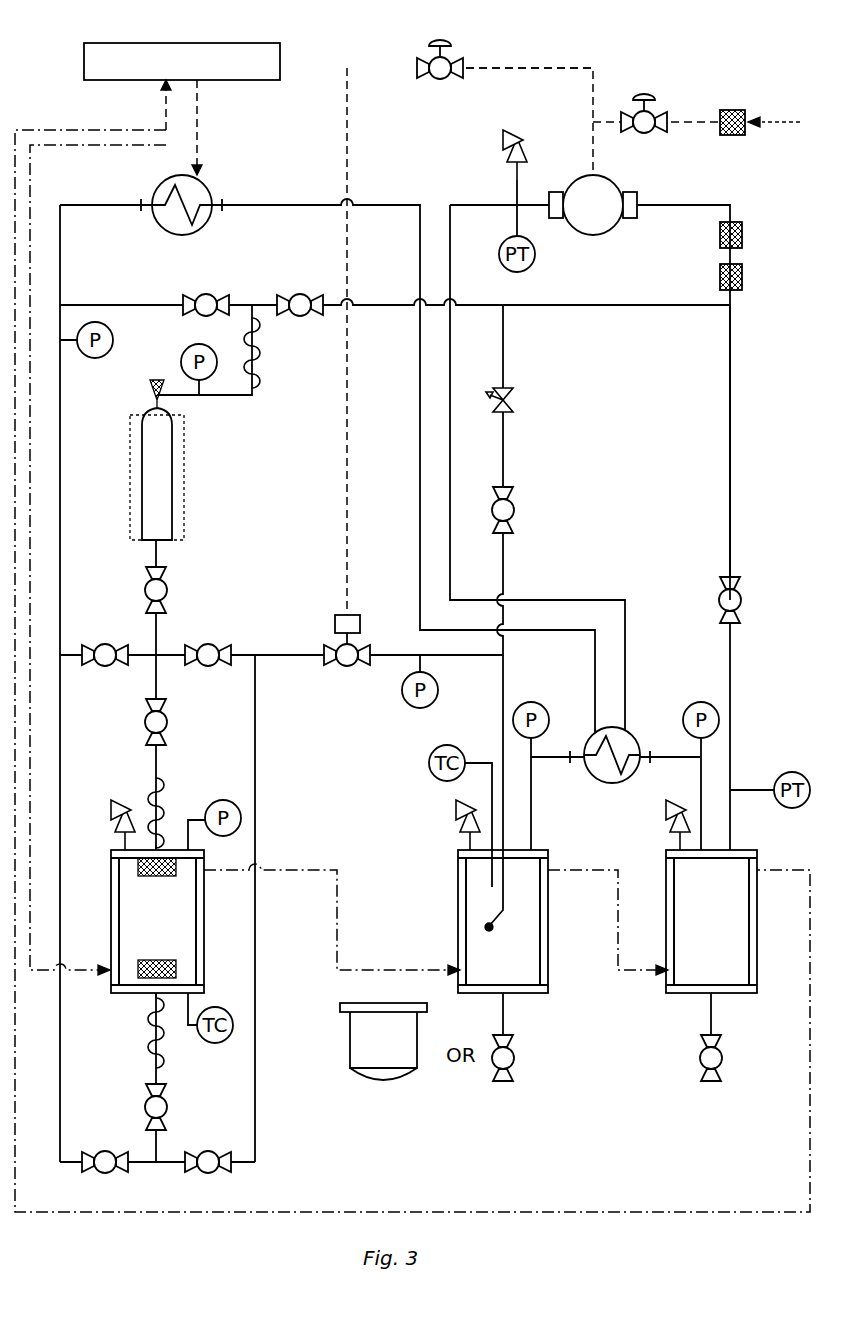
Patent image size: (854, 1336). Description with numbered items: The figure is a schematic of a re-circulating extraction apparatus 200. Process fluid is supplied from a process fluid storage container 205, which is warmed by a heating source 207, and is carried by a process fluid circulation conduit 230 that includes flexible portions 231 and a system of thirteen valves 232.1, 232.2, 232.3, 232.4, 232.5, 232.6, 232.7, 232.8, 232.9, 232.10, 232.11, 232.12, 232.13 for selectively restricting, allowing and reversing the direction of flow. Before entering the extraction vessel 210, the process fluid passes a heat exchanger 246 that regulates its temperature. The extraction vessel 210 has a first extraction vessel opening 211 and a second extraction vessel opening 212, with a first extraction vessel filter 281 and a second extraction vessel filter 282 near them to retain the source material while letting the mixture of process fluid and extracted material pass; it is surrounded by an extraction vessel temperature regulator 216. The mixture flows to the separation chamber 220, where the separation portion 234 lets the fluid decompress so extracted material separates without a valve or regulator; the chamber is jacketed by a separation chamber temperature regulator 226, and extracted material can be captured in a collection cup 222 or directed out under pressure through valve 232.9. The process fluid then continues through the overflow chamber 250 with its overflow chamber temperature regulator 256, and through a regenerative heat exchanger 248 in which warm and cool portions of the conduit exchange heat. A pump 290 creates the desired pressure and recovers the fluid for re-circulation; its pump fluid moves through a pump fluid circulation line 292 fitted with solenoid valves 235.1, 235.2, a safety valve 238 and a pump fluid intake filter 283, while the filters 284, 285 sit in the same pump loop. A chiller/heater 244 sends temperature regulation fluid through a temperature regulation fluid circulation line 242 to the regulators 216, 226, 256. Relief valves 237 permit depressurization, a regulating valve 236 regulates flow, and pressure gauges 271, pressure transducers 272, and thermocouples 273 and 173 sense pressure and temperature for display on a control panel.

The re-circulating extraction apparatus 200 is at (690, 40).
The process fluid storage container 205 is at (158, 492).
The heating source 207 is at (132, 440).
The extraction vessel 210 is at (193, 891).
The first extraction vessel opening 211 is at (160, 845).
The second extraction vessel opening 212 is at (152, 998).
The extraction vessel temperature regulator 216 is at (111, 915).
The separation chamber 220 is at (498, 969).
The collection cup 222 is at (380, 1050).
The separation chamber temperature regulator 226 is at (458, 895).
The process fluid circulation conduit 230 is at (730, 455).
The flexible portions 231 is at (262, 348).
The valve 232.1 is at (120, 625).
The valve 232.2 is at (208, 648).
The valve 232.3 is at (162, 722).
The valve 232.4 is at (162, 590).
The valve 232.5 is at (110, 1172).
The valve 232.6 is at (213, 1172).
The valve 232.7 is at (162, 1108).
The valve 232.8 is at (515, 512).
The valve 232.9 is at (495, 1062).
The valve 232.10 is at (700, 1062).
The valve 232.11 is at (718, 600).
The valve 232.12 is at (300, 300).
The valve 232.13 is at (206, 298).
The separation portion 234 is at (485, 927).
The solenoid valve 235.1 is at (644, 134).
The solenoid valve 235.2 is at (440, 80).
The regulating valve 236 is at (515, 400).
The relief valve 237 is at (505, 155).
The safety valve 238 is at (335, 628).
The temperature regulation fluid circulation line 242 is at (97, 145).
The chiller/heater 244 is at (178, 43).
The heat exchanger 246 is at (210, 185).
The regenerative heat exchanger 248 is at (600, 780).
The overflow chamber 250 is at (696, 944).
The overflow chamber temperature regulator 256 is at (666, 900).
The pressure gauge 271 is at (112, 340).
The pressure transducer 272 is at (535, 262).
The thermocouple 273 is at (429, 760).
The first extraction vessel filter 281 is at (172, 876).
The second extraction vessel filter 282 is at (143, 960).
The pump fluid intake filter 283 is at (733, 110).
The filter 284 is at (742, 276).
The filter 285 is at (742, 232).
The pump 290 is at (612, 230).
The pump fluid circulation line 292 is at (520, 68).
The thermocouple 173 is at (205, 1043).